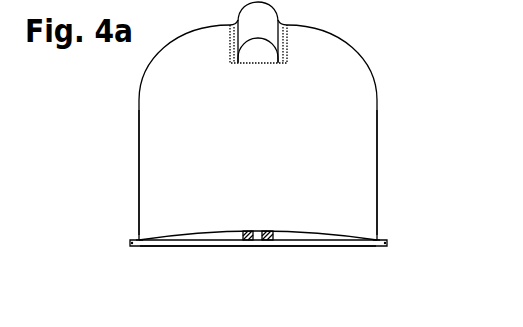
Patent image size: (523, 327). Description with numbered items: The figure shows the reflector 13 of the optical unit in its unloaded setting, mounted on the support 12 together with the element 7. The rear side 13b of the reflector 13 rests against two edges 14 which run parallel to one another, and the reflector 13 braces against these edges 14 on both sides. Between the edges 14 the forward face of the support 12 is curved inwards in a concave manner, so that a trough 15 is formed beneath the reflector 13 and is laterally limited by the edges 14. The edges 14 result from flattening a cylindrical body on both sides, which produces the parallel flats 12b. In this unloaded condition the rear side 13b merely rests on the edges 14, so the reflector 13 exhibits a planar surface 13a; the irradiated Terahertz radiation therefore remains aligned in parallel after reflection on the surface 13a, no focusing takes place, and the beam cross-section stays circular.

The connector / cable feedthrough 7 is at (348, 47).
The support 12 is at (343, 110).
The flats 12b is at (136, 152).
The reflector 13 is at (337, 246).
The surface 13a is at (188, 248).
The rear side 13b is at (228, 238).
The edges 14 is at (138, 239).
The trough 15 is at (287, 236).